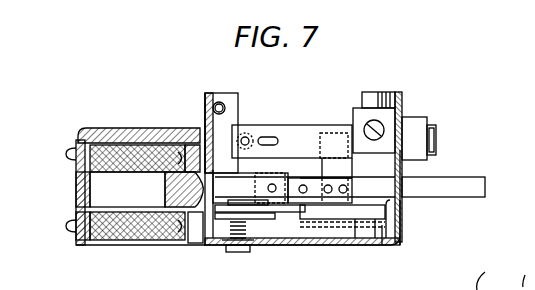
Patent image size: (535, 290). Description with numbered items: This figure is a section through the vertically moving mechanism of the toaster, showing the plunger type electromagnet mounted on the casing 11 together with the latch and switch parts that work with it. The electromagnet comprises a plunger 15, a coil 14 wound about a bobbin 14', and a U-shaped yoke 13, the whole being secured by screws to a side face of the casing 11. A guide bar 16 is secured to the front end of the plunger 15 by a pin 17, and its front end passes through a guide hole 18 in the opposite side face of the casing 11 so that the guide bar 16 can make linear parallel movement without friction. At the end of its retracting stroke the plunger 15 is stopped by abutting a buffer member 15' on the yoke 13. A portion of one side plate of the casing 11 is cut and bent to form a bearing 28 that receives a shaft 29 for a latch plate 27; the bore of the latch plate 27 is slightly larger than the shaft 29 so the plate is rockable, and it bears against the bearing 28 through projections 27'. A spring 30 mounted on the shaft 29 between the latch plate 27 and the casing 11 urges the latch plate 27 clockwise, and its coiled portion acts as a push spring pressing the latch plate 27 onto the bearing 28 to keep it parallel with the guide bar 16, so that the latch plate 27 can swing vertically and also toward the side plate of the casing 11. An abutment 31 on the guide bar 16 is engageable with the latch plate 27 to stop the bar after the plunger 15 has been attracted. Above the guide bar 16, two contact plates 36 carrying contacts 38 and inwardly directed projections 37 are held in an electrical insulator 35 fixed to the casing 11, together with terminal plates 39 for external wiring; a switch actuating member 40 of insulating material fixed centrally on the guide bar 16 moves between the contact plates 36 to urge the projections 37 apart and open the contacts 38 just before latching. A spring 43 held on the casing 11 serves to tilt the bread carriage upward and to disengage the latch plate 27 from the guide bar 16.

The casing 11 is at (313, 168).
The U-shaped yoke 13 is at (82, 245).
The coil 14 is at (130, 244).
The bobbin 14' is at (115, 150).
The plunger 15 is at (146, 189).
The buffer member 15' is at (60, 189).
The guide bar 16 is at (446, 179).
The pin 17 is at (268, 188).
The guide hole 18 is at (402, 200).
The latch plate 27 is at (342, 240).
The projections 27' is at (180, 244).
The bearing 28 is at (258, 218).
The shaft 29 is at (240, 252).
The spring 30 is at (226, 248).
The abutment 31 is at (382, 245).
The electrical insulator 35 is at (416, 113).
The contact plates 36 is at (313, 128).
The projections 37 is at (278, 141).
The contacts 38 is at (248, 135).
The terminal plates 39 is at (437, 135).
The switch actuating member 40 is at (330, 155).
The spring 43 is at (385, 95).